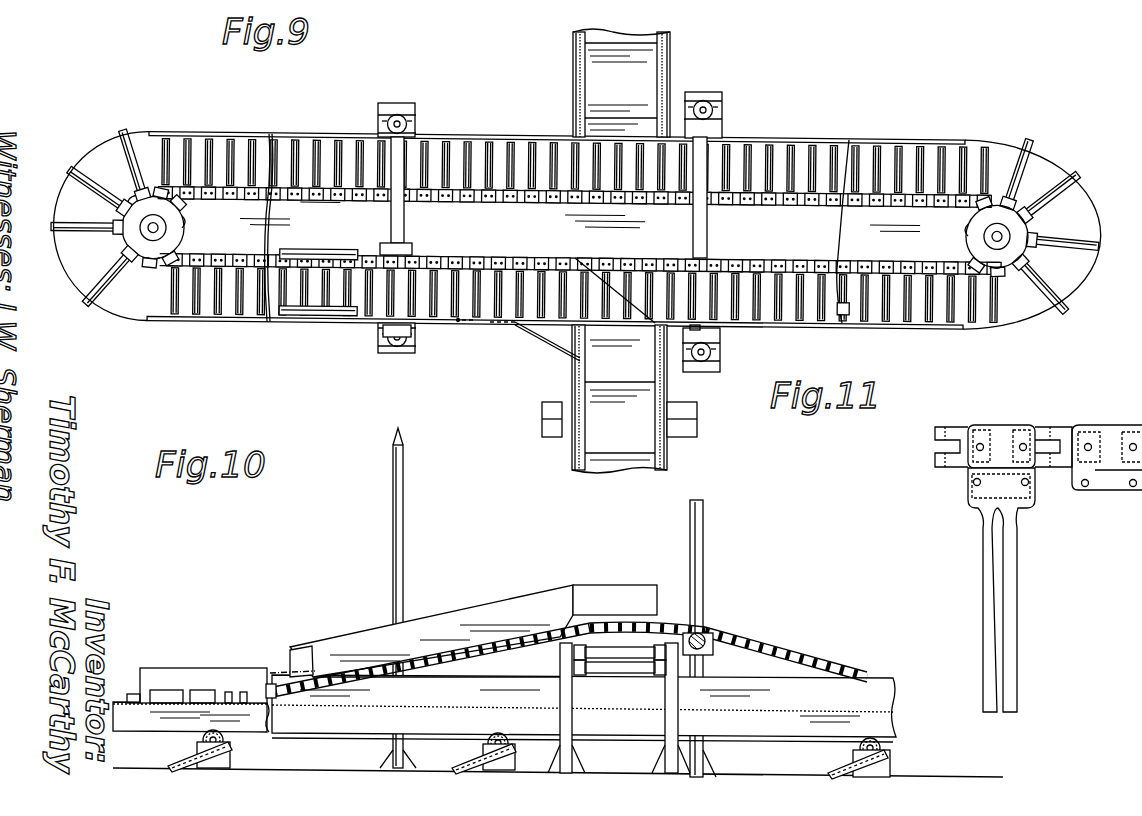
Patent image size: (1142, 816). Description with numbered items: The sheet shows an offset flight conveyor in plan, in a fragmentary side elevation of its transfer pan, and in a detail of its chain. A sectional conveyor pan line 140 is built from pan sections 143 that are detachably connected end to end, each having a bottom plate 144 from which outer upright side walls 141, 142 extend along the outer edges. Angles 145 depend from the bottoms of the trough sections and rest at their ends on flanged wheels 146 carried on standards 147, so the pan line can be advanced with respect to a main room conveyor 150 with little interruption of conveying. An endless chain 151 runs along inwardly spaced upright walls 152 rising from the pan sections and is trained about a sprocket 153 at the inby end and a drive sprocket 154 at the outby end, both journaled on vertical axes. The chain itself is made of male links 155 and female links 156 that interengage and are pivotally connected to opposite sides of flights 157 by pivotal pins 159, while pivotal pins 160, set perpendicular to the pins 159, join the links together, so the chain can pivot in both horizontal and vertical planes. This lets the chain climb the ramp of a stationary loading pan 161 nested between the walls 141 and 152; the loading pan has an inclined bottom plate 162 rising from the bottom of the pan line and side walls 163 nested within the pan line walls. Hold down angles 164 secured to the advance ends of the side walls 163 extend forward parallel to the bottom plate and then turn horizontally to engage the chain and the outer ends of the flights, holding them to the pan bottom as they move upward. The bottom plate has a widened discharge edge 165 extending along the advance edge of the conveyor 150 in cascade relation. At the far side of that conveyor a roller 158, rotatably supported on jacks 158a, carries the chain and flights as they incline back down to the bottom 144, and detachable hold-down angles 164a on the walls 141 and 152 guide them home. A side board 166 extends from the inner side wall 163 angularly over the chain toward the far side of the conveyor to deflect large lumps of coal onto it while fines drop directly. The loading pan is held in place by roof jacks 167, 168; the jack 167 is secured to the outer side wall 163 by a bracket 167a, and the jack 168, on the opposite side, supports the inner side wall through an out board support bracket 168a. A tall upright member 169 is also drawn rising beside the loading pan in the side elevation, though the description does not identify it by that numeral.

In FIG. 9, the sectional conveyor pan line 140 is at (240, 328).
In FIG. 10, the sectional conveyor pan line 140 is at (898, 700).
In FIG. 9, the upright side wall 141 is at (178, 326).
In FIG. 9, the upright side wall 142 is at (290, 136).
In FIG. 9, the pan section 143 is at (236, 136).
In FIG. 9, the bottom plate 144 is at (180, 148).
In FIG. 10, the bottom plate 144 is at (648, 718).
In FIG. 10, the angle 145 is at (302, 736).
In FIG. 10, the flanged wheel 146 is at (203, 742).
In FIG. 10, the standard 147 is at (216, 766).
In FIG. 9, the main room conveyor 150 is at (668, 368).
In FIG. 10, the main room conveyor 150 is at (585, 668).
In FIG. 9, the endless chain 151 is at (120, 216).
In FIG. 10, the endless chain 151 is at (350, 684).
In FIG. 9, the inwardly spaced upright wall 152 is at (566, 256).
In FIG. 10, the inwardly spaced upright wall 152 is at (749, 690).
In FIG. 9, the sprocket 153 is at (185, 236).
In FIG. 9, the drive sprocket 154 is at (966, 238).
In FIG. 11, the male link 155 is at (962, 412).
In FIG. 11, the female link 156 is at (1046, 427).
In FIG. 9, the flight 157 is at (150, 143).
In FIG. 10, the flight 157 is at (766, 640).
In FIG. 11, the flight 157 is at (988, 555).
In FIG. 9, the roller 158 is at (708, 246).
In FIG. 10, the roller 158 is at (712, 633).
In FIG. 9, the jack 158a is at (723, 109).
In FIG. 10, the jack 158a is at (704, 515).
In FIG. 11, the pivotal pin 159 is at (1021, 444).
In FIG. 11, the pivotal pin 160 is at (1082, 430).
In FIG. 9, the loading pan 161 is at (502, 345).
In FIG. 10, the loading pan 161 is at (528, 596).
In FIG. 10, the inclined bottom plate 162 is at (442, 677).
In FIG. 9, the side wall 163 is at (476, 262).
In FIG. 10, the side wall 163 is at (352, 636).
In FIG. 9, the hold down angle 164 is at (300, 252).
In FIG. 10, the hold down angle 164 is at (290, 665).
In FIG. 9, the detachable hold-down angle 164a is at (822, 262).
In FIG. 9, the widened discharge edge 165 is at (556, 346).
In FIG. 9, the side board 166 is at (620, 262).
In FIG. 10, the side board 166 is at (645, 614).
In FIG. 9, the roof jack 167 is at (397, 352).
In FIG. 9, the bracket 167a is at (384, 345).
In FIG. 9, the roof jack 168 is at (413, 126).
In FIG. 9, the out board support bracket 168a is at (405, 218).
In FIG. 10, the pole 169 is at (405, 513).